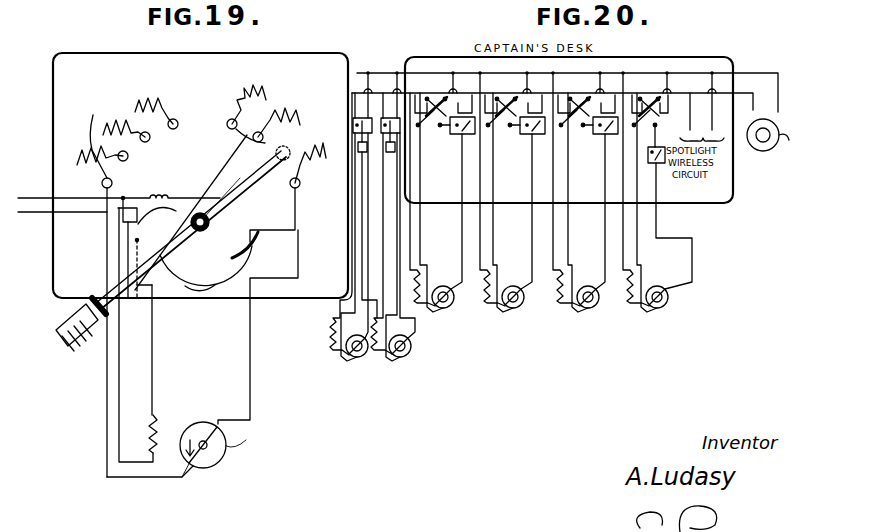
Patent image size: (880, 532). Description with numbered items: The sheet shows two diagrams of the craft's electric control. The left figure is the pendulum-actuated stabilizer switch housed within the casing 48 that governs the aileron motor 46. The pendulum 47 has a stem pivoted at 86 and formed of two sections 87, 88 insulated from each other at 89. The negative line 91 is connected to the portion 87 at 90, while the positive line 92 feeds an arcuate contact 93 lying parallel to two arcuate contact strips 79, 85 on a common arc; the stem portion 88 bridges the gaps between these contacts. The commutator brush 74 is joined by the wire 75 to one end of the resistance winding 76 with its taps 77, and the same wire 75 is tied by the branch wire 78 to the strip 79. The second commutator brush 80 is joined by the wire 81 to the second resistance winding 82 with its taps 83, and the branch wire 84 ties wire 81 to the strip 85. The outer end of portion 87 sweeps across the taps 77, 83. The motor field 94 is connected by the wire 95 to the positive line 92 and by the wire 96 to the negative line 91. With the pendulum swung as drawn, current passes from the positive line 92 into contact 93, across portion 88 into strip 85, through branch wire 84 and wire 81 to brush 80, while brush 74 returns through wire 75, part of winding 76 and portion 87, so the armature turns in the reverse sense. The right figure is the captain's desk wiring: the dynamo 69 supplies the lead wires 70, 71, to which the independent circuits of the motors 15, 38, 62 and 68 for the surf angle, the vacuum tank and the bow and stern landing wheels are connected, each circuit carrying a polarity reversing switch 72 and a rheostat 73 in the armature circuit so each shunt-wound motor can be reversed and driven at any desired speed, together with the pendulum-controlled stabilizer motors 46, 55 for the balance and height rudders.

In FIG. 19, the casing 48 is at (308, 48).
In FIG. 19, the second resistance winding 82 is at (133, 103).
In FIG. 19, the taps 83 is at (129, 157).
In FIG. 19, the resistance winding 76 is at (268, 99).
In FIG. 19, the taps 77 is at (230, 131).
In FIG. 19, the pendulum stem section 88 is at (98, 296).
In FIG. 19, the pendulum 47 is at (52, 350).
In FIG. 19, the pendulum stem section 87 is at (239, 176).
In FIG. 19, the connection point 90 is at (218, 208).
In FIG. 19, the insulation 89 is at (224, 221).
In FIG. 19, the arcuate contact strip 79 is at (236, 258).
In FIG. 19, the arcuate contact strip 85 is at (184, 276).
In FIG. 19, the arcuate contact 93 is at (207, 292).
In FIG. 19, the negative line 91 is at (35, 196).
In FIG. 19, the positive line 92 is at (37, 214).
In FIG. 19, the branch wire 84 is at (160, 207).
In FIG. 19, the pivot 86 is at (152, 253).
In FIG. 19, the branch wire 78 is at (281, 226).
In FIG. 19, the wire 81 is at (90, 447).
In FIG. 19, the wire 96 is at (118, 385).
In FIG. 19, the motor field 94 is at (160, 414).
In FIG. 19, the wire 95 is at (156, 347).
In FIG. 19, the wire 75 is at (252, 347).
In FIG. 19, the commutator brush 74 is at (206, 425).
In FIG. 19, the electric motor 46 is at (244, 436).
In FIG. 20, the electric motor 46 is at (411, 354).
In FIG. 19, the second commutator brush 80 is at (194, 470).
In FIG. 20, the lead wire 71 is at (781, 80).
In FIG. 20, the lead wire 70 is at (754, 102).
In FIG. 20, the dynamo 69 is at (767, 145).
In FIG. 20, the stabilizer motor 55 is at (346, 355).
In FIG. 20, the polarity reversing switch 72 is at (441, 128).
In FIG. 20, the rheostat 73 is at (465, 136).
In FIG. 20, the motor 15 is at (452, 306).
In FIG. 20, the motor 68 is at (522, 306).
In FIG. 20, the motor 62 is at (597, 306).
In FIG. 20, the motor 38 is at (668, 302).